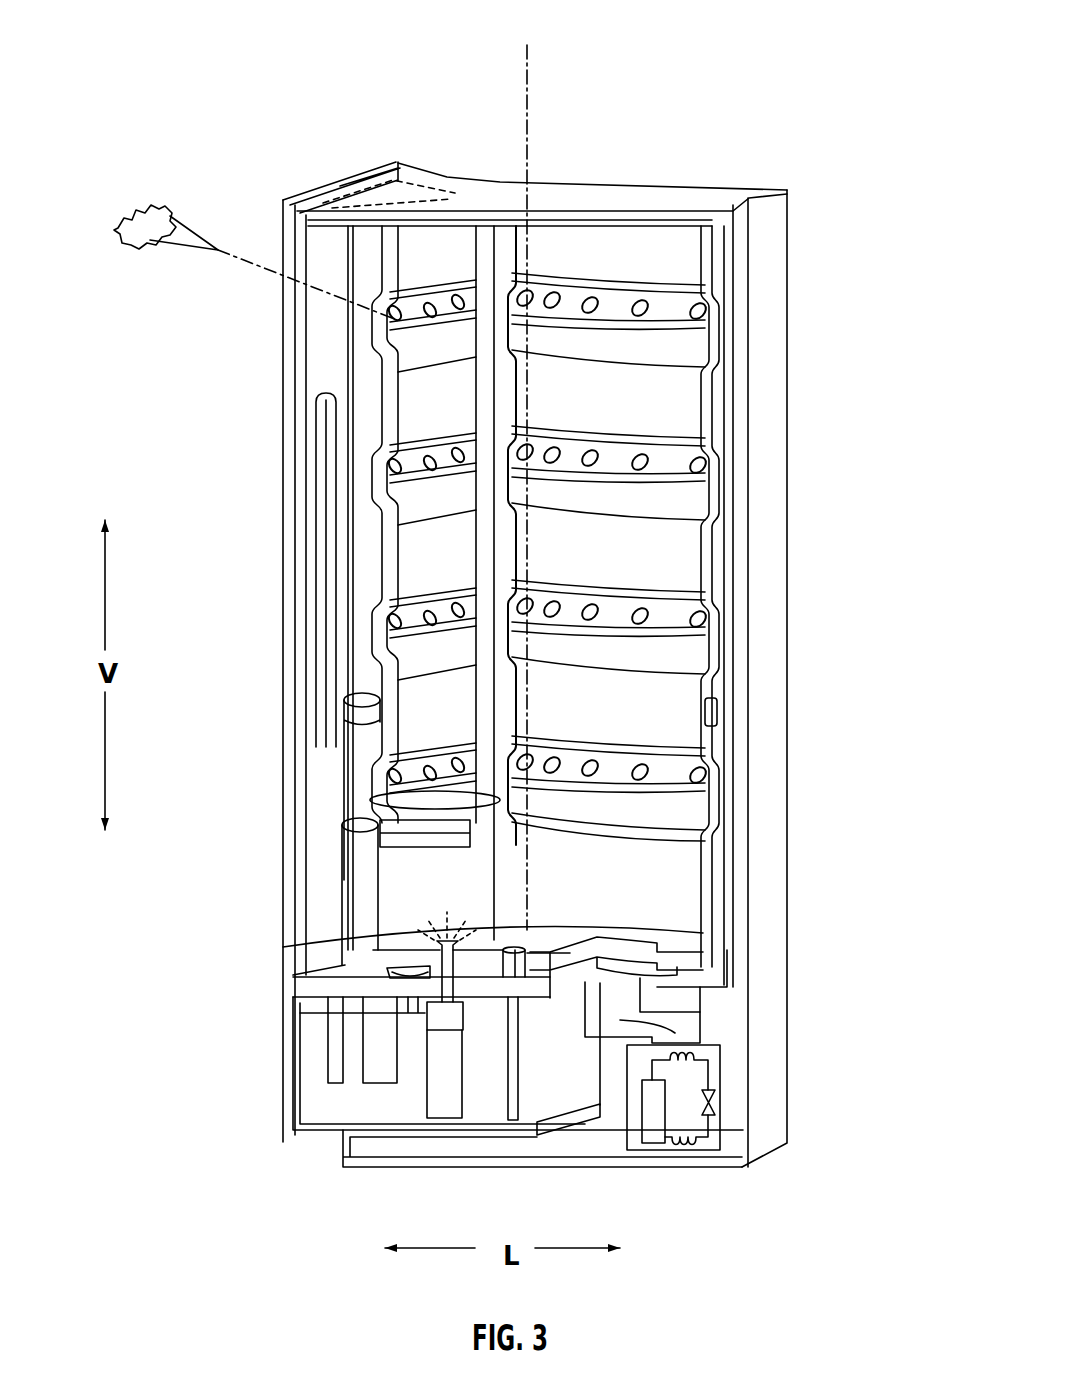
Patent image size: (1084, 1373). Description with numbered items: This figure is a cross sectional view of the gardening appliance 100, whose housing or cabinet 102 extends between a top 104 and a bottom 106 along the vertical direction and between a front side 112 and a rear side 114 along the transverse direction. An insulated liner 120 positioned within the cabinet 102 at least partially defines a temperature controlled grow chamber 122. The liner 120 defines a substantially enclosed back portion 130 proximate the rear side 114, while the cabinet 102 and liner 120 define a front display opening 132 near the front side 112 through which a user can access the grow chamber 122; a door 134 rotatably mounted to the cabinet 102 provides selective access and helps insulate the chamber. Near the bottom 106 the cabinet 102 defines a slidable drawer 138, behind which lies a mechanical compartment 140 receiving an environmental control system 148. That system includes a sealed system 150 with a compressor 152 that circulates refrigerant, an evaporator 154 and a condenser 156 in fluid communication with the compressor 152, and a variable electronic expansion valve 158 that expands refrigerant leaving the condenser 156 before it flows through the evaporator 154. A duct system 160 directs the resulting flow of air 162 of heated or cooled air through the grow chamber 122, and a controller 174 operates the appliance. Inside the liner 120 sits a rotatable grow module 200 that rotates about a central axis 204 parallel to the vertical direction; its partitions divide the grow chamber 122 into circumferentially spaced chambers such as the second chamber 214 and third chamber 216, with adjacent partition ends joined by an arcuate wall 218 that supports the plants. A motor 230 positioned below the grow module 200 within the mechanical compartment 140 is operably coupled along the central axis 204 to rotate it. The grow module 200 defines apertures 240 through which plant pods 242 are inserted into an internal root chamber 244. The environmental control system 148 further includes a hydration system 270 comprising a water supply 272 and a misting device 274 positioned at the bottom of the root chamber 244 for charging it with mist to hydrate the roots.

The gardening appliance 100 is at (848, 74).
The cabinet 102 is at (760, 328).
The top 104 is at (623, 240).
The bottom 106 is at (407, 1168).
The front side 112 is at (401, 157).
The rear side 114 is at (783, 501).
The insulated liner 120 is at (736, 231).
The grow chamber 122 is at (658, 246).
The enclosed back portion 130 is at (726, 630).
The front display opening 132 is at (355, 768).
The door 134 is at (283, 292).
The drawer 138 is at (285, 1075).
The mechanical compartment 140 is at (587, 1132).
The environmental control system 148 is at (763, 1114).
The sealed system 150 is at (715, 1117).
The compressor 152 is at (657, 1143).
The evaporator 154 is at (695, 1140).
The condenser 156 is at (682, 1058).
The variable electronic expansion valve 158 is at (715, 1105).
The duct system 160 is at (710, 1011).
The flow of air 162 is at (620, 1020).
The controller 174 is at (447, 193).
The grow module 200 is at (584, 257).
The central axis 204 is at (538, 76).
The second chamber 214 is at (713, 575).
The third chamber 216 is at (357, 576).
The arcuate wall 218 is at (385, 415).
The motor 230 is at (497, 997).
The aperture 240 is at (713, 765).
The plant pod 242 is at (190, 230).
The root chamber 244 is at (485, 460).
The hydration system 270 is at (437, 1037).
The water supply 272 is at (427, 1017).
The misting device 274 is at (372, 966).